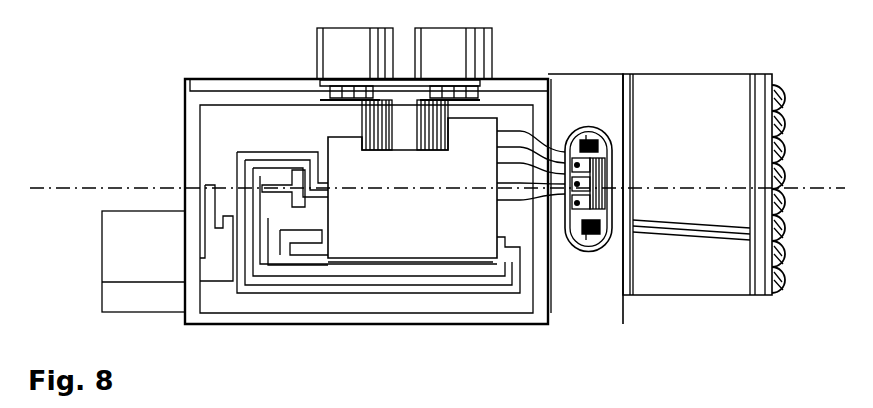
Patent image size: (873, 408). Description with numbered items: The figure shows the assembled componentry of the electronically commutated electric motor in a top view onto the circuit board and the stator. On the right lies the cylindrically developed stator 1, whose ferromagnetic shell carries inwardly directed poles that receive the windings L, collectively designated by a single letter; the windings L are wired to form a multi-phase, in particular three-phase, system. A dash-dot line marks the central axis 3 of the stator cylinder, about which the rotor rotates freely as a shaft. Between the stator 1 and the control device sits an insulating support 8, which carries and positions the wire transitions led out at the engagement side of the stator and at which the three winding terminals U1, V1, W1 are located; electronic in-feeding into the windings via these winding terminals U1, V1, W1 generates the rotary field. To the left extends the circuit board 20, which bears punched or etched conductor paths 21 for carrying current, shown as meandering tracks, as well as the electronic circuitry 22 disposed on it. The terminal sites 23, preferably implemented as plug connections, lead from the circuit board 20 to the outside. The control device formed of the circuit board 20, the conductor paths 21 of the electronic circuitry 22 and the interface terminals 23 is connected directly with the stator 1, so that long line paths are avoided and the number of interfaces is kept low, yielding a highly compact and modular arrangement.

The stator 1 is at (682, 130).
The central axis 3 is at (808, 185).
The insulating support 8 is at (592, 148).
The circuit board 20 is at (225, 321).
The conductor paths 21 is at (298, 271).
The electronic circuitry 22 is at (384, 219).
The terminal sites 23 is at (345, 53).
The windings L is at (780, 133).
The winding terminal U1 is at (577, 165).
The winding terminal V1 is at (577, 184).
The winding terminal W1 is at (577, 203).